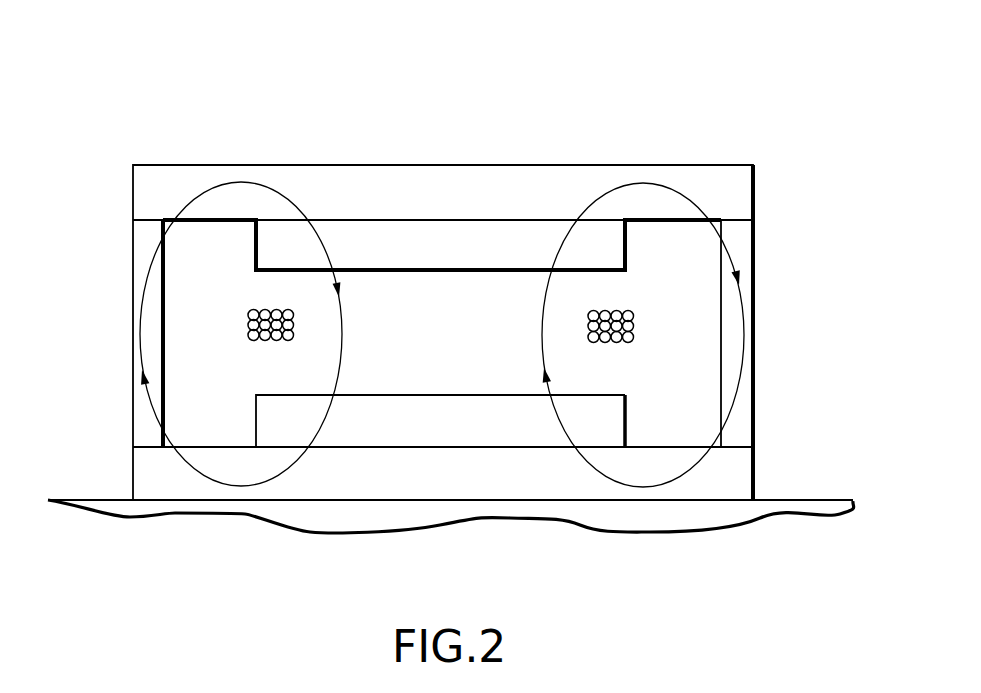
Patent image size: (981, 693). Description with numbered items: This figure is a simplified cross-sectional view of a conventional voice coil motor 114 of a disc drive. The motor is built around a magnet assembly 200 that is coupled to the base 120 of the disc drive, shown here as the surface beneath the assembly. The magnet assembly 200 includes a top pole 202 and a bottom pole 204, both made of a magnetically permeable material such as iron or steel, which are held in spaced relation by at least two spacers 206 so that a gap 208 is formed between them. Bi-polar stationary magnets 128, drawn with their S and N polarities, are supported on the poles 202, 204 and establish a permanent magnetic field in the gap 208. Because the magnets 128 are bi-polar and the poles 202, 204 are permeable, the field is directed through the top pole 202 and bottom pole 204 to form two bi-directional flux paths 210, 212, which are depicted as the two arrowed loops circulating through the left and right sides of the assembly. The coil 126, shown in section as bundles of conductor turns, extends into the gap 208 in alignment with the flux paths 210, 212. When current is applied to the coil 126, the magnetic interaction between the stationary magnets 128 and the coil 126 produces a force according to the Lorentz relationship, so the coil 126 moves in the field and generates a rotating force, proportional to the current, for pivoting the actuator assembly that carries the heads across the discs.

The voice coil motor 114 is at (640, 70).
The base 120 is at (808, 512).
The coil 126 is at (253, 313).
The stationary magnets 128 is at (447, 234).
The magnet assembly 200 is at (274, 165).
The top pole 202 is at (742, 191).
The bottom pole 204 is at (740, 470).
The spacers 206 is at (140, 250).
The gap 208 is at (480, 341).
The flux path 210 is at (343, 340).
The flux path 212 is at (677, 193).